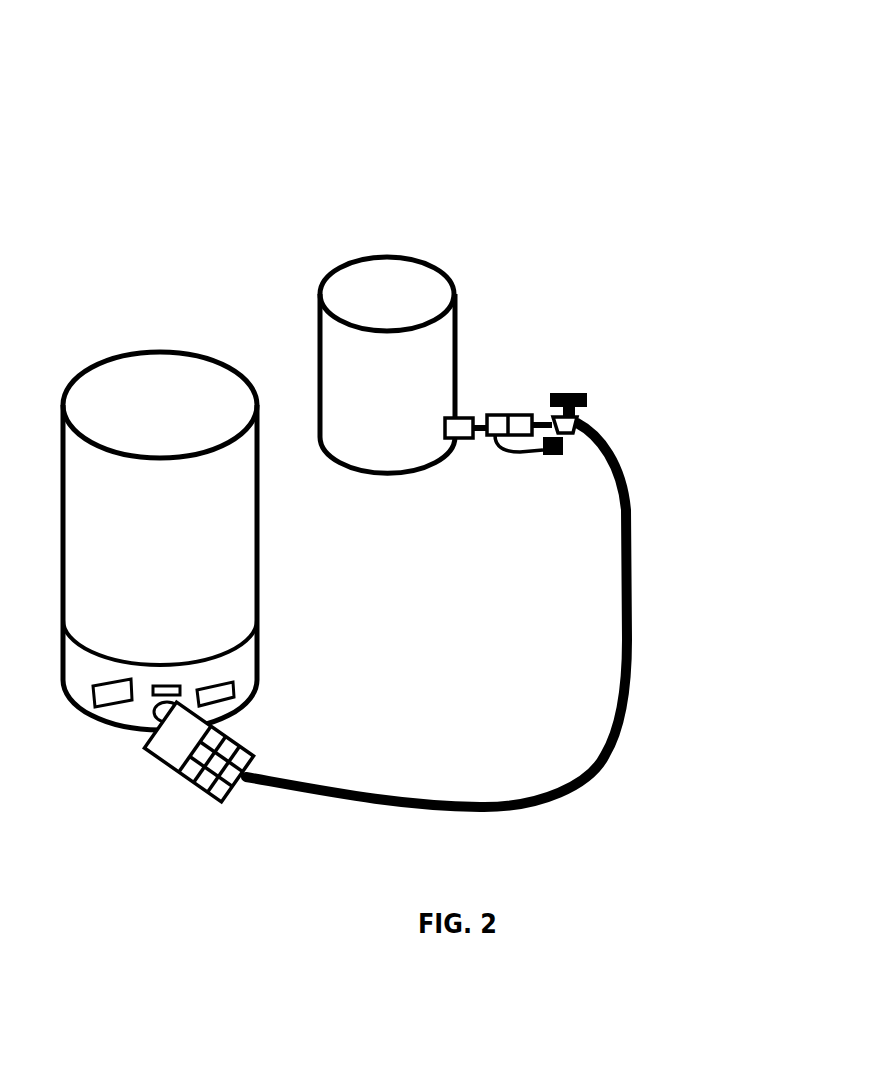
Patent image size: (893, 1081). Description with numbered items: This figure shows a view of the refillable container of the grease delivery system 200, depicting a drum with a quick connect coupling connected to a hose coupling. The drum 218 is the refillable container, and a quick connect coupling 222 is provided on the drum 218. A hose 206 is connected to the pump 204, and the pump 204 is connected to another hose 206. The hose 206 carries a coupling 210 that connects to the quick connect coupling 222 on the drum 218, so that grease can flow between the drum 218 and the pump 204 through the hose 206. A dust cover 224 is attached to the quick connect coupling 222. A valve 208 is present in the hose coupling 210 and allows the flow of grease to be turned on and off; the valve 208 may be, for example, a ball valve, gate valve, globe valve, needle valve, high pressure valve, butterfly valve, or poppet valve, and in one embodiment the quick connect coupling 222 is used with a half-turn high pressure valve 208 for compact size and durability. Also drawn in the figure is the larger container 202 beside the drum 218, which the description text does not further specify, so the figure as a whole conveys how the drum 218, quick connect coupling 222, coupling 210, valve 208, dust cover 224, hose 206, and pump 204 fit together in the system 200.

The grease delivery system 200 is at (457, 113).
The first container 202 is at (233, 587).
The pump 204 is at (223, 800).
The hose 206 is at (632, 570).
The valve 208 is at (587, 397).
The coupling 210 is at (527, 413).
The drum 218 is at (412, 377).
The quick connect coupling 222 is at (465, 440).
The dust cover 224 is at (563, 455).